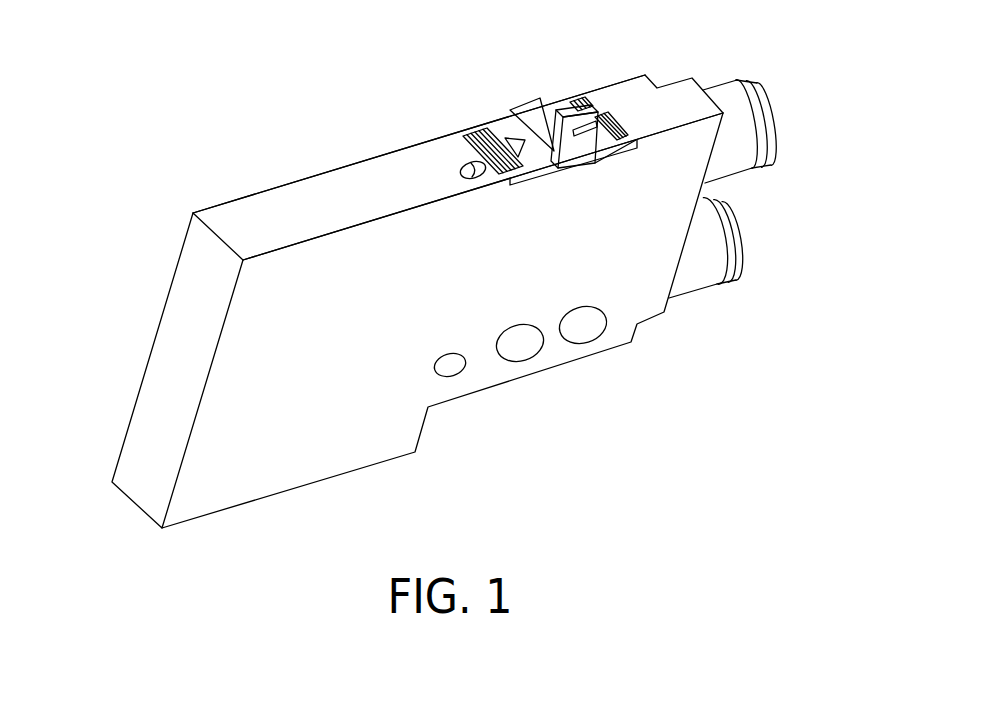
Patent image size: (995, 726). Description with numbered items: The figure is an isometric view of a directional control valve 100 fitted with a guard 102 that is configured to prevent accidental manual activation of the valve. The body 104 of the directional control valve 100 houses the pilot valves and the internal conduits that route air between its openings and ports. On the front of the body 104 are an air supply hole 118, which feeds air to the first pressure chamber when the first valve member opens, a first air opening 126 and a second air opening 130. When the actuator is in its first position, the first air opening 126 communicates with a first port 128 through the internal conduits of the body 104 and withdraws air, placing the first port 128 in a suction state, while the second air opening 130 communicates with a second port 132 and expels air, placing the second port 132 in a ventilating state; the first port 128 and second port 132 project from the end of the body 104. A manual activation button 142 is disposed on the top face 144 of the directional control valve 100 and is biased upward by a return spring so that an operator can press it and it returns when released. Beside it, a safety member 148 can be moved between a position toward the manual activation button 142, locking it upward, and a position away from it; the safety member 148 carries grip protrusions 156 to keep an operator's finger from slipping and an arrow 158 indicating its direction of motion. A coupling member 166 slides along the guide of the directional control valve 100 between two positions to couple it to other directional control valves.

The directional control valve 100 is at (206, 40).
The guard 102 is at (521, 108).
The body 104 is at (155, 348).
The air supply hole 118 is at (449, 368).
The first air opening 126 is at (583, 327).
The first port 128 is at (698, 255).
The second air opening 130 is at (520, 345).
The second port 132 is at (732, 137).
The manual activation button 142 is at (475, 162).
The top face 144 is at (348, 193).
The safety member 148 is at (505, 135).
The grip protrusions 156 is at (490, 128).
The arrow 158 is at (507, 112).
The coupling member 166 is at (574, 100).